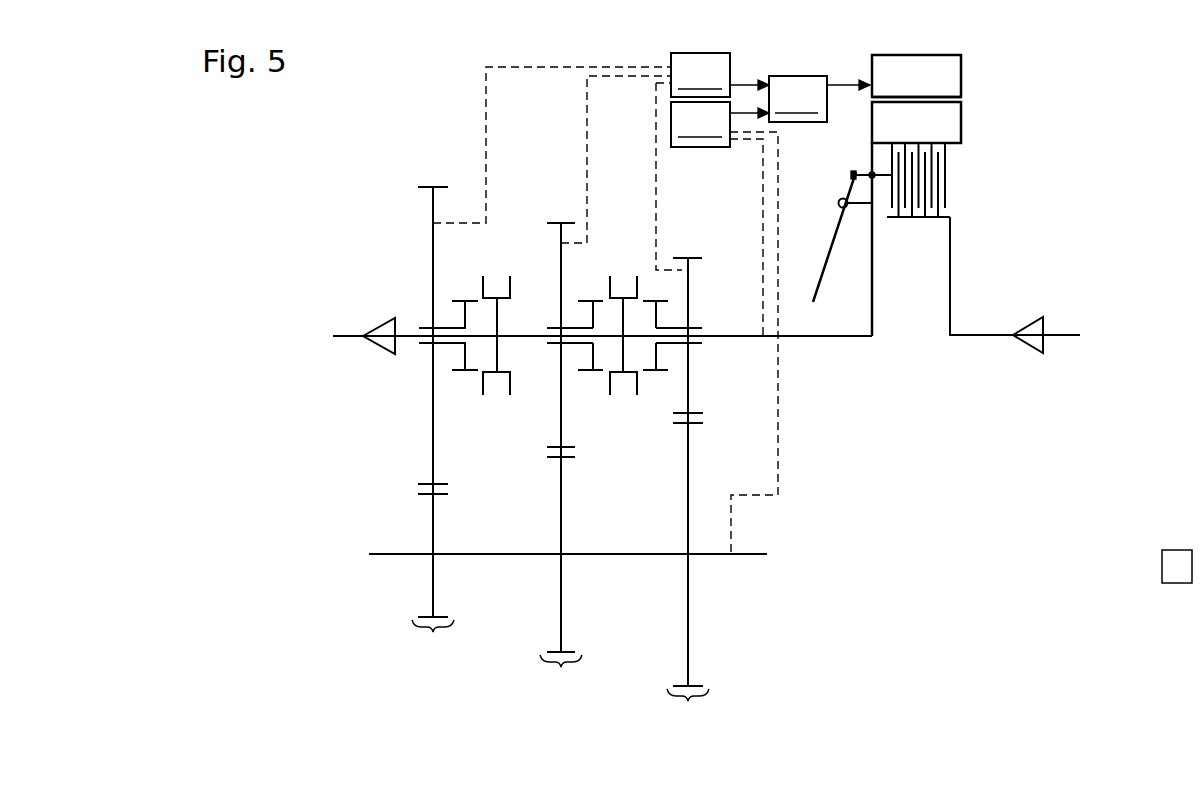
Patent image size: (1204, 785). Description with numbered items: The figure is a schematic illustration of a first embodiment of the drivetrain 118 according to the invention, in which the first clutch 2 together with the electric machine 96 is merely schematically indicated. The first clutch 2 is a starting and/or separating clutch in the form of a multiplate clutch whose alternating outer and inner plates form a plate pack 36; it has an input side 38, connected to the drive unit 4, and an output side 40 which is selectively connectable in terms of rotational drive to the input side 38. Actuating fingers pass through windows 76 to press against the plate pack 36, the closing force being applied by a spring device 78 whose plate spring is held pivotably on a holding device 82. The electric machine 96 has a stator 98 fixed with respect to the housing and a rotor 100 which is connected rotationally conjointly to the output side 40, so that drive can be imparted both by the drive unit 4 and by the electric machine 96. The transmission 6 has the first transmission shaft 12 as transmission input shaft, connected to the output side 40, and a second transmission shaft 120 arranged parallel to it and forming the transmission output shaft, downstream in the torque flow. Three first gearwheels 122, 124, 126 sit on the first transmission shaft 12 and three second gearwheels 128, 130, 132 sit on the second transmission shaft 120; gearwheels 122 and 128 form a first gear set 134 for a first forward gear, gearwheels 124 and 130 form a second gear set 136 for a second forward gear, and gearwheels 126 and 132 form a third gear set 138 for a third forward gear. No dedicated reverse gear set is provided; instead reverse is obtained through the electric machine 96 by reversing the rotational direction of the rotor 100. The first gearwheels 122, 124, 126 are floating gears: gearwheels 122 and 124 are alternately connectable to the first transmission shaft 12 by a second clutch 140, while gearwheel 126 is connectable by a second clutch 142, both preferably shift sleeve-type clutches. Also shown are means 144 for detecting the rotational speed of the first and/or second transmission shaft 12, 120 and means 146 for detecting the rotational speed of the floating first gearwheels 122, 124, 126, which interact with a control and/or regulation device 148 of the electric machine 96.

The first clutch 2 is at (1123, 228).
The drive unit 4 is at (1177, 566).
The transmission 6 is at (293, 212).
The first transmission shaft 12 is at (735, 337).
The plate pack 36 is at (930, 171).
The input side 38 is at (950, 282).
The output side 40 is at (873, 313).
The windows 76 is at (851, 171).
The spring device 78 is at (830, 243).
The holding device 82 is at (839, 199).
The electric machine 96 is at (965, 99).
The stator 98 is at (940, 90).
The rotor 100 is at (940, 127).
The drivetrain 118 is at (340, 138).
The second transmission shaft 120 is at (708, 557).
The first gearwheel 122 is at (688, 272).
The first gearwheel 124 is at (561, 264).
The first gearwheel 126 is at (435, 212).
The second gearwheel 128 is at (688, 472).
The second gearwheel 130 is at (562, 505).
The second gearwheel 132 is at (435, 523).
The first gear set 134 is at (688, 709).
The second gear set 136 is at (561, 675).
The third gear set 138 is at (433, 640).
The second clutch 140 is at (626, 273).
The second clutch 142 is at (500, 272).
The means for detection of rotational speed of transmission shafts 144 is at (720, 124).
The means for detection of rotational speed of floating gears 146 is at (720, 75).
The control and/or regulation device 148 is at (819, 99).